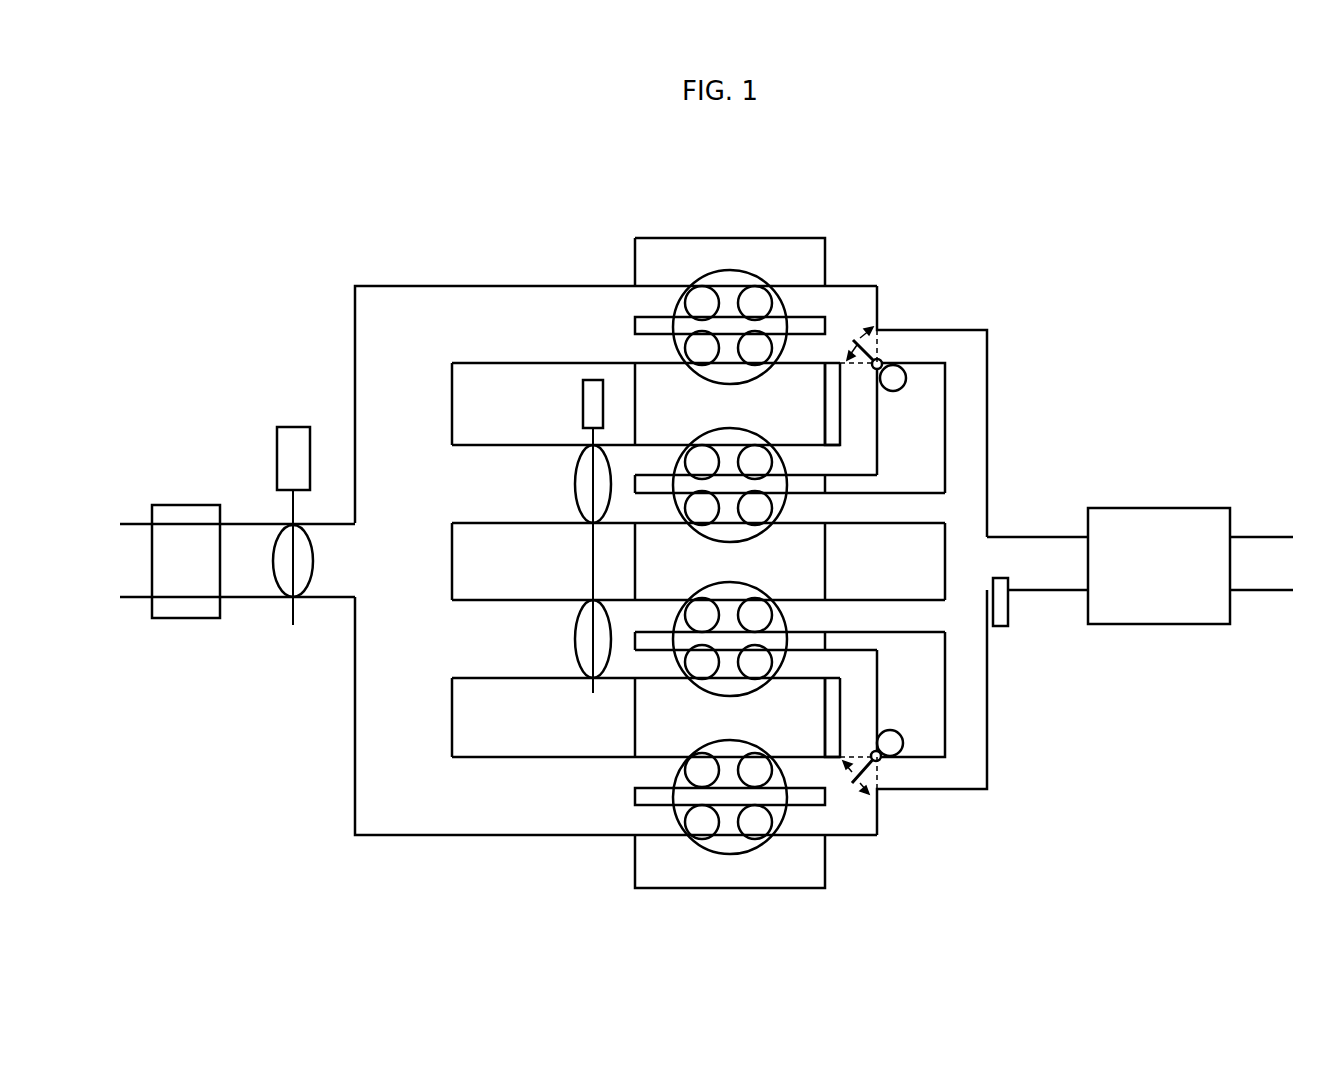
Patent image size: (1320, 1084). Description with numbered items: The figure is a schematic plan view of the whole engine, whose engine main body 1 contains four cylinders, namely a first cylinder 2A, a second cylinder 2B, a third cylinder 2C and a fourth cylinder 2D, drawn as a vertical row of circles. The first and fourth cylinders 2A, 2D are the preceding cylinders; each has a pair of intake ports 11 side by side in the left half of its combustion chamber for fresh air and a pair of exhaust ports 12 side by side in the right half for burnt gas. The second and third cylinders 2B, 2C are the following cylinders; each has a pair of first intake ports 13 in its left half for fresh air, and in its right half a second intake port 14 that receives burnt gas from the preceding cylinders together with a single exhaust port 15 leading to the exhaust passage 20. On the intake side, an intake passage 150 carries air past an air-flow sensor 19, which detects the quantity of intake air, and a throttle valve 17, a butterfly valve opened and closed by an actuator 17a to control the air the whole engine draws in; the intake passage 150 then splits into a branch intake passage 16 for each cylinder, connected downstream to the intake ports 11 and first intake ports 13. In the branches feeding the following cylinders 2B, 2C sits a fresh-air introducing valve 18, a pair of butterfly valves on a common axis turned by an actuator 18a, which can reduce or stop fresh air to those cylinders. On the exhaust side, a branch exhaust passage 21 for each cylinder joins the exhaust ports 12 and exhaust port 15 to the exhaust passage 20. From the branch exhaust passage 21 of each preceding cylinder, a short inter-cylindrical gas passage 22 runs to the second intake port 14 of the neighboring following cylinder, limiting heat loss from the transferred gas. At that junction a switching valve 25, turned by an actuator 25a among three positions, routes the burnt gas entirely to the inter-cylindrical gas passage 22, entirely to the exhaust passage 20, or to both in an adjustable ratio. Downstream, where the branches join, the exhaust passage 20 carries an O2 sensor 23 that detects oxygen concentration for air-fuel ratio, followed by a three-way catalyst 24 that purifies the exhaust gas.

The engine main body 1 is at (824, 224).
The first cylinder 2A is at (730, 270).
The second cylinder 2B is at (715, 435).
The third cylinder 2C is at (715, 590).
The fourth cylinder 2D is at (728, 848).
The intake port 11 is at (697, 345).
The exhaust port 12 is at (757, 343).
The first intake port 13 is at (695, 505).
The second intake port 14 is at (750, 460).
The exhaust port 15 is at (757, 610).
The branch intake passage 16 is at (477, 292).
The throttle valve 17 is at (305, 577).
The actuator 17a is at (283, 433).
The fresh-air introducing valve 18 is at (580, 508).
The actuator 18a is at (585, 395).
The air-flow sensor 19 is at (185, 512).
The intake passage 150 is at (252, 600).
The exhaust passage 20 is at (1043, 548).
The branch exhaust passage 21 is at (988, 400).
The inter-cylindrical gas passage 22 is at (873, 437).
The O2 sensor 23 is at (1003, 625).
The three-way catalyst 24 is at (1166, 612).
The switching valve 25 is at (855, 340).
The actuator 25a is at (897, 370).